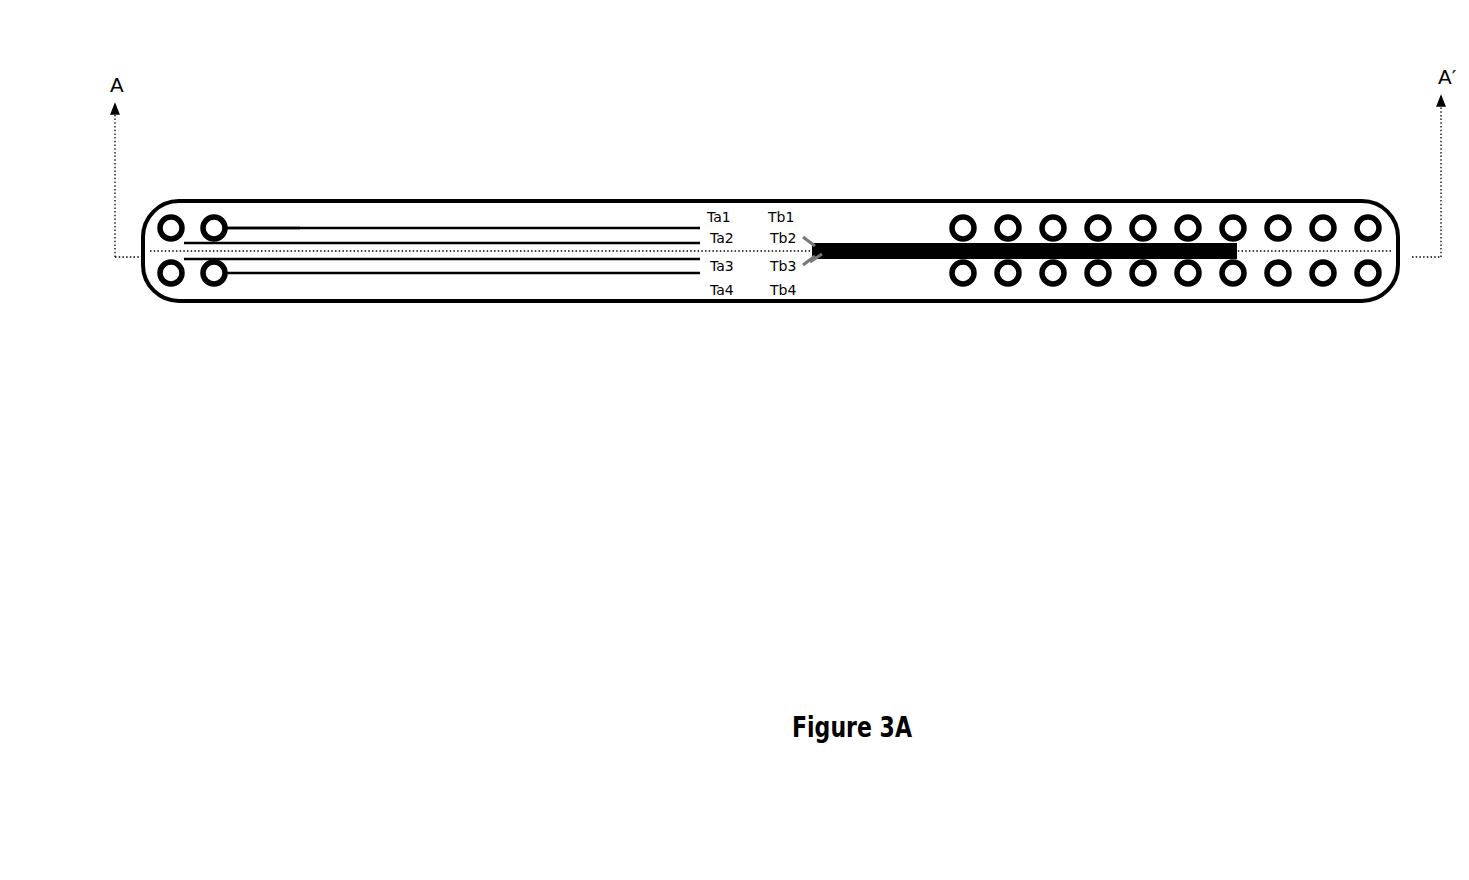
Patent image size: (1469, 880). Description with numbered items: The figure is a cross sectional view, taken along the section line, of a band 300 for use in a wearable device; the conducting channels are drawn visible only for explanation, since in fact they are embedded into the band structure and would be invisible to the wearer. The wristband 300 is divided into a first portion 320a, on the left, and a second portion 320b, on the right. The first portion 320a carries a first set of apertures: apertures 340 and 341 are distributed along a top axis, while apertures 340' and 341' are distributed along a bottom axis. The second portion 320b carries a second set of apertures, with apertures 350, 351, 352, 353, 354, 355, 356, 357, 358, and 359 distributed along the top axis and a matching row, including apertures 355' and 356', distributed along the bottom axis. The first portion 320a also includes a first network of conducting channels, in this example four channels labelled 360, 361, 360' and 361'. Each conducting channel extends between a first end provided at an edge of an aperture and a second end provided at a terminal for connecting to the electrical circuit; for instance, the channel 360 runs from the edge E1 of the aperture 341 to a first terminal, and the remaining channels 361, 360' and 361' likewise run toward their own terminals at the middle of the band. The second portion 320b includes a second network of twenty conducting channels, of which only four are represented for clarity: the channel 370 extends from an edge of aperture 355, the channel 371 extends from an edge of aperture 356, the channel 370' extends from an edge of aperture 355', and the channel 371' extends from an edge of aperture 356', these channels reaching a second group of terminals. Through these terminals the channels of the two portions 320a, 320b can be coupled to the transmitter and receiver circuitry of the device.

The band 300 is at (356, 548).
The first portion 320a is at (150, 410).
The second portion 320b is at (808, 410).
The aperture 340 is at (169, 196).
The aperture 341 is at (224, 196).
The aperture 340' is at (166, 307).
The aperture 341' is at (224, 307).
The aperture 350 is at (965, 214).
The aperture 351 is at (1010, 214).
The aperture 352 is at (1054, 214).
The aperture 353 is at (1099, 214).
The aperture 354 is at (1144, 214).
The aperture 355 is at (1186, 176).
The aperture 356 is at (1224, 196).
The aperture 357 is at (1278, 214).
The aperture 358 is at (1322, 214).
The aperture 359 is at (1366, 214).
The aperture 355' is at (1175, 317).
The aperture 356' is at (1255, 316).
The conducting channel 360 is at (463, 154).
The conducting channel 361 is at (442, 166).
The conducting channel 360' is at (463, 320).
The conducting channel 361' is at (442, 309).
The conducting channel 370 is at (1019, 179).
The conducting channel 371 is at (819, 177).
The conducting channel 370' is at (875, 308).
The conducting channel 371' is at (833, 313).
The edge E1 is at (231, 226).